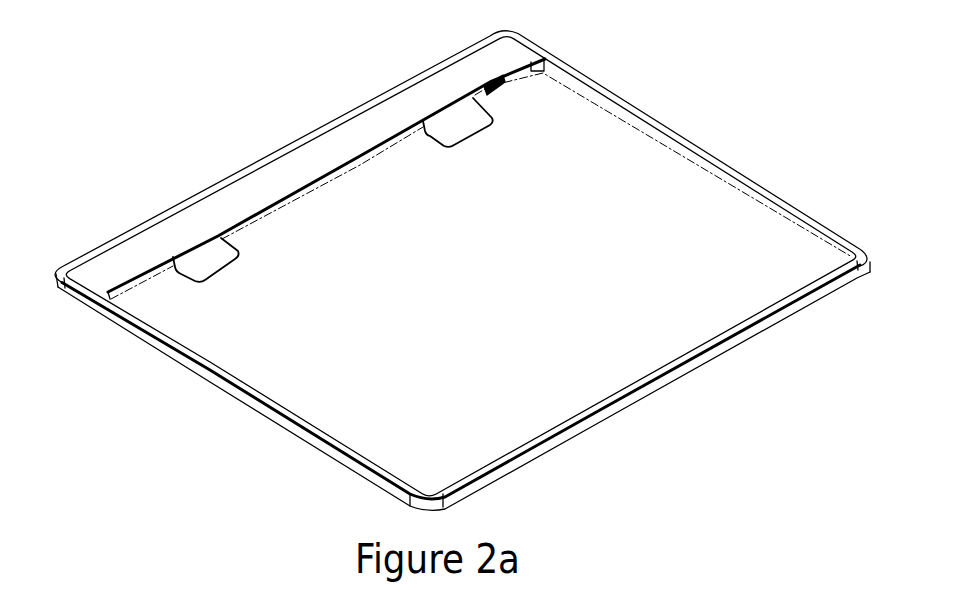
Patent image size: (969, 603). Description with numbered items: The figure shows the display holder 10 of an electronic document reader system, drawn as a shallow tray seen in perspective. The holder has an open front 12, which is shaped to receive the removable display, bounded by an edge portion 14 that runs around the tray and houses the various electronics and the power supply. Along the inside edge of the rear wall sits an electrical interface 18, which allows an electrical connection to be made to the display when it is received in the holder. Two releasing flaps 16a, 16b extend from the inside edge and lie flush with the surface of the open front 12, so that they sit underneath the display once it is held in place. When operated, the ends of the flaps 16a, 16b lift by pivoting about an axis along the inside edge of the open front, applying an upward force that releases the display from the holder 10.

The display holder 10 is at (790, 115).
The open front 12 is at (783, 262).
The edge portion 14 is at (270, 183).
The releasing flap 16a is at (203, 263).
The releasing flap 16b is at (462, 133).
The electrical interface 18 is at (503, 78).